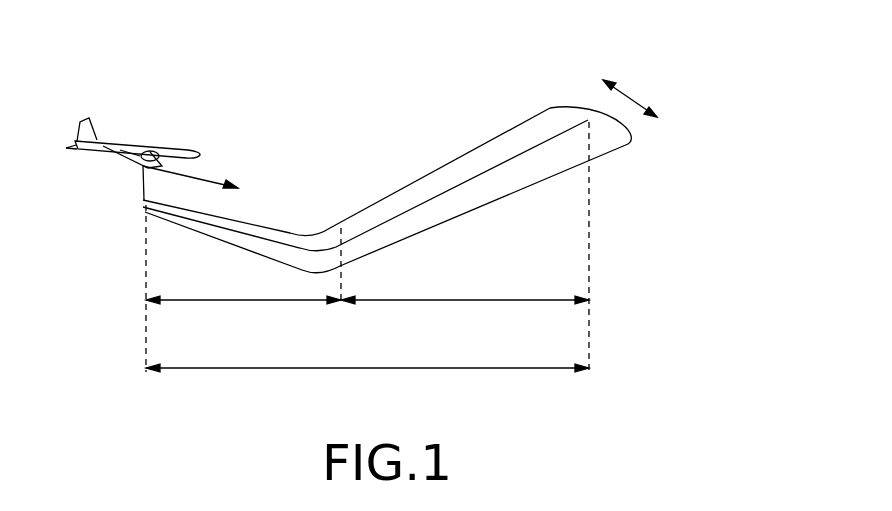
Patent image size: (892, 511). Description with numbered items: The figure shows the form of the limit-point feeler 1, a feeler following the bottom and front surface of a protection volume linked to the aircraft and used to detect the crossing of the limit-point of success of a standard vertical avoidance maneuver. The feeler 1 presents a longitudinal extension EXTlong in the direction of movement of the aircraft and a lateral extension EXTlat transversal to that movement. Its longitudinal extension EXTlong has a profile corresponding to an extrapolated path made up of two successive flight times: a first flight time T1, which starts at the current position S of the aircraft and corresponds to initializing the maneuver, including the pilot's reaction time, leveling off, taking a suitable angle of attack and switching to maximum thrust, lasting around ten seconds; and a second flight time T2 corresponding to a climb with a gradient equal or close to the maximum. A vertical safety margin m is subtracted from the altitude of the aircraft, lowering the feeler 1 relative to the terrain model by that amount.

The limit-point feeler 1 is at (455, 177).
The current position of the aircraft S is at (152, 143).
The vertical safety margin m is at (172, 181).
The first flight time T1 is at (243, 316).
The second flight time T2 is at (465, 317).
The longitudinal extension EXTlong is at (367, 395).
The lateral extension EXTlat is at (670, 79).